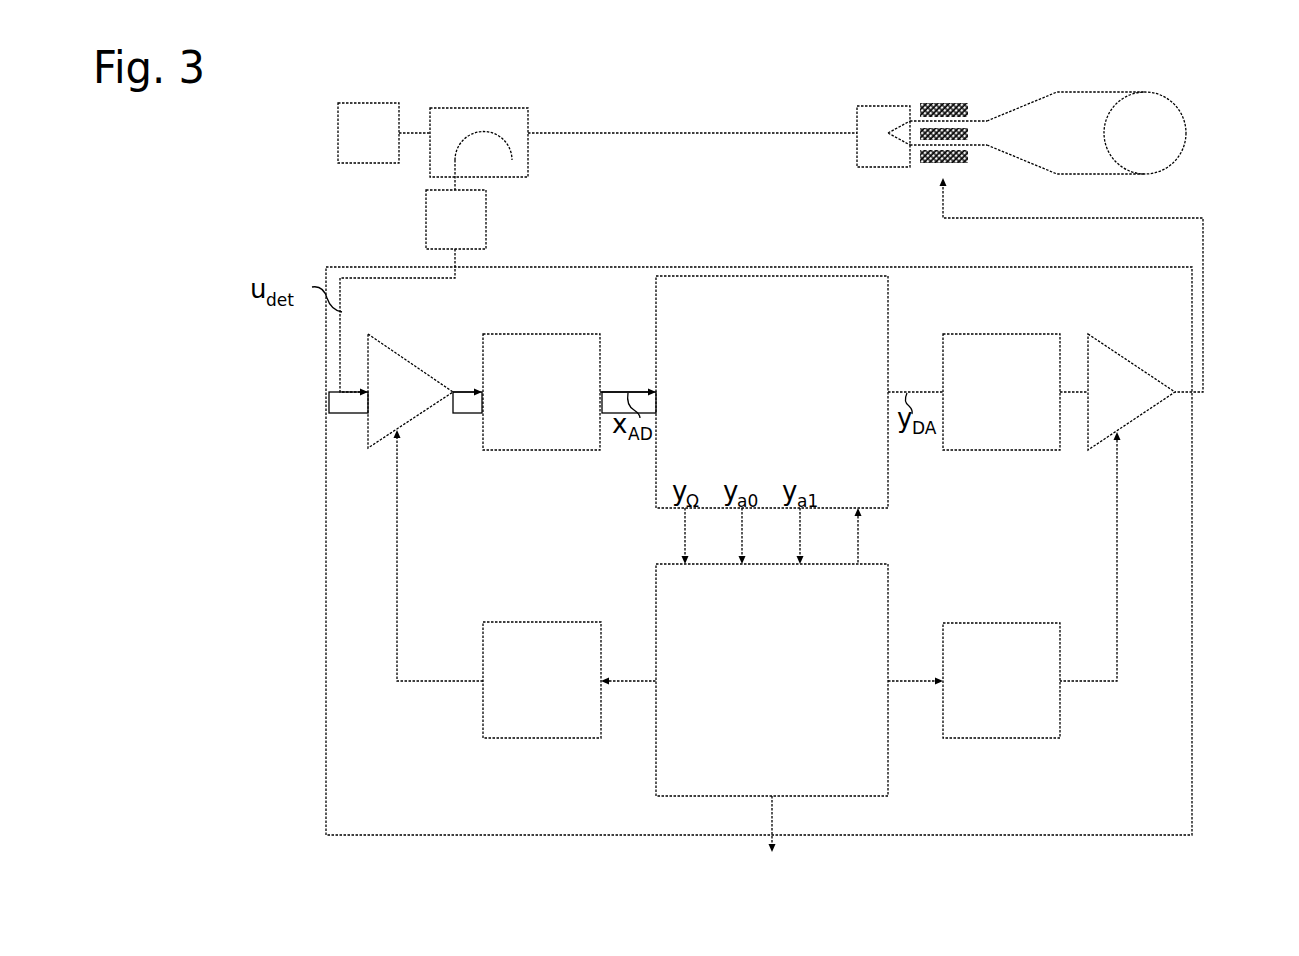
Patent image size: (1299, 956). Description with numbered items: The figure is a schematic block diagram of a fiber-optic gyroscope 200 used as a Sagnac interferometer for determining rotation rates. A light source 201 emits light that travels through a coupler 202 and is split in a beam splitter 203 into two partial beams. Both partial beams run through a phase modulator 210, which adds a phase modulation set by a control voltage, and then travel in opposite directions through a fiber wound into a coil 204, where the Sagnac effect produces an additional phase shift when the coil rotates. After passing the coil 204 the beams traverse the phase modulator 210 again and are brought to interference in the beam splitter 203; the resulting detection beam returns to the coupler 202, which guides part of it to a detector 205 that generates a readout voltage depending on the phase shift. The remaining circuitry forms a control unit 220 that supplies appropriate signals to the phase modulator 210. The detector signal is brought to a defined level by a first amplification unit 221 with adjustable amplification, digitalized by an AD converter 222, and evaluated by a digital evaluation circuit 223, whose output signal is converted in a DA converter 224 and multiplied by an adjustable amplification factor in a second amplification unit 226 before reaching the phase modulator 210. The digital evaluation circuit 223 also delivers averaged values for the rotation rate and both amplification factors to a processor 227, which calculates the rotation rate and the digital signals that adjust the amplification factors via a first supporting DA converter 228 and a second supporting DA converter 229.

The fiber-optic gyroscope 200 is at (742, 78).
The light source 201 is at (370, 103).
The coupler 202 is at (479, 108).
The beam splitter 203 is at (880, 107).
The coil 204 is at (1153, 95).
The detector 205 is at (486, 231).
The phase modulator 210 is at (943, 103).
The control unit 220 is at (1192, 515).
The first amplification unit 221 is at (385, 347).
The AD converter 222 is at (548, 333).
The digital evaluation circuit 223 is at (888, 326).
The DA converter 224 is at (1020, 335).
The second amplification unit 226 is at (1142, 368).
The processor 227 is at (888, 605).
The first supporting DA converter 228 is at (1015, 622).
The second supporting DA converter 229 is at (535, 623).